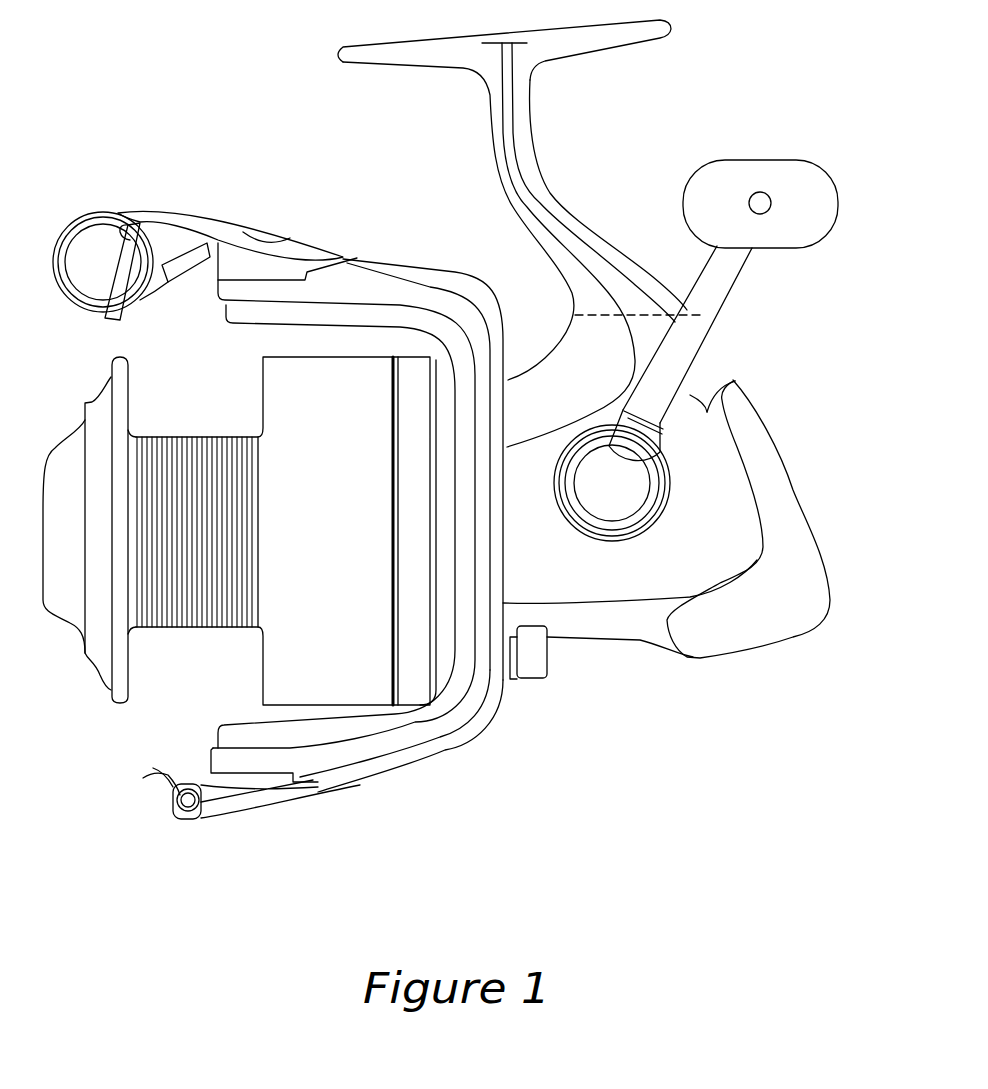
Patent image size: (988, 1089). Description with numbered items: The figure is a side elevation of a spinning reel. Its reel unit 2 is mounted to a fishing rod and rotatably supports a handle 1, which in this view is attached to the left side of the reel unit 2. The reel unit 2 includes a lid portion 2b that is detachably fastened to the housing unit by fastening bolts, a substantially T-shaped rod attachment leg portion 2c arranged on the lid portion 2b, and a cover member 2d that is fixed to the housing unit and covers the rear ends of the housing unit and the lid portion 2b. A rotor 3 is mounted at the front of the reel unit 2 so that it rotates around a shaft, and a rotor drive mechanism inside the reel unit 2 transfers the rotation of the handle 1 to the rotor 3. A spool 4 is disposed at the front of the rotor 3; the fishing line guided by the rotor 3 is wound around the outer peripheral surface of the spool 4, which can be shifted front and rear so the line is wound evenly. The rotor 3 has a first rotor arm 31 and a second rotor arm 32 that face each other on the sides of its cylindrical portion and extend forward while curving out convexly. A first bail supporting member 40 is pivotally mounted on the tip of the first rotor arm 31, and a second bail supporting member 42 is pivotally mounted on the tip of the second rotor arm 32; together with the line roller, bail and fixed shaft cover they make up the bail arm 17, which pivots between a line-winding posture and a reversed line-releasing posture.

The handle 1 is at (722, 287).
The reel unit 2 is at (610, 198).
The lid portion 2b is at (733, 383).
The rod attachment leg portion 2c is at (548, 180).
The cover member 2d is at (810, 575).
The rotor 3 is at (357, 516).
The first rotor arm 31 is at (363, 302).
The second rotor arm 32 is at (418, 745).
The spool 4 is at (200, 437).
The bail arm 17 is at (93, 326).
The first bail supporting member 40 is at (250, 215).
The second bail supporting member 42 is at (272, 815).